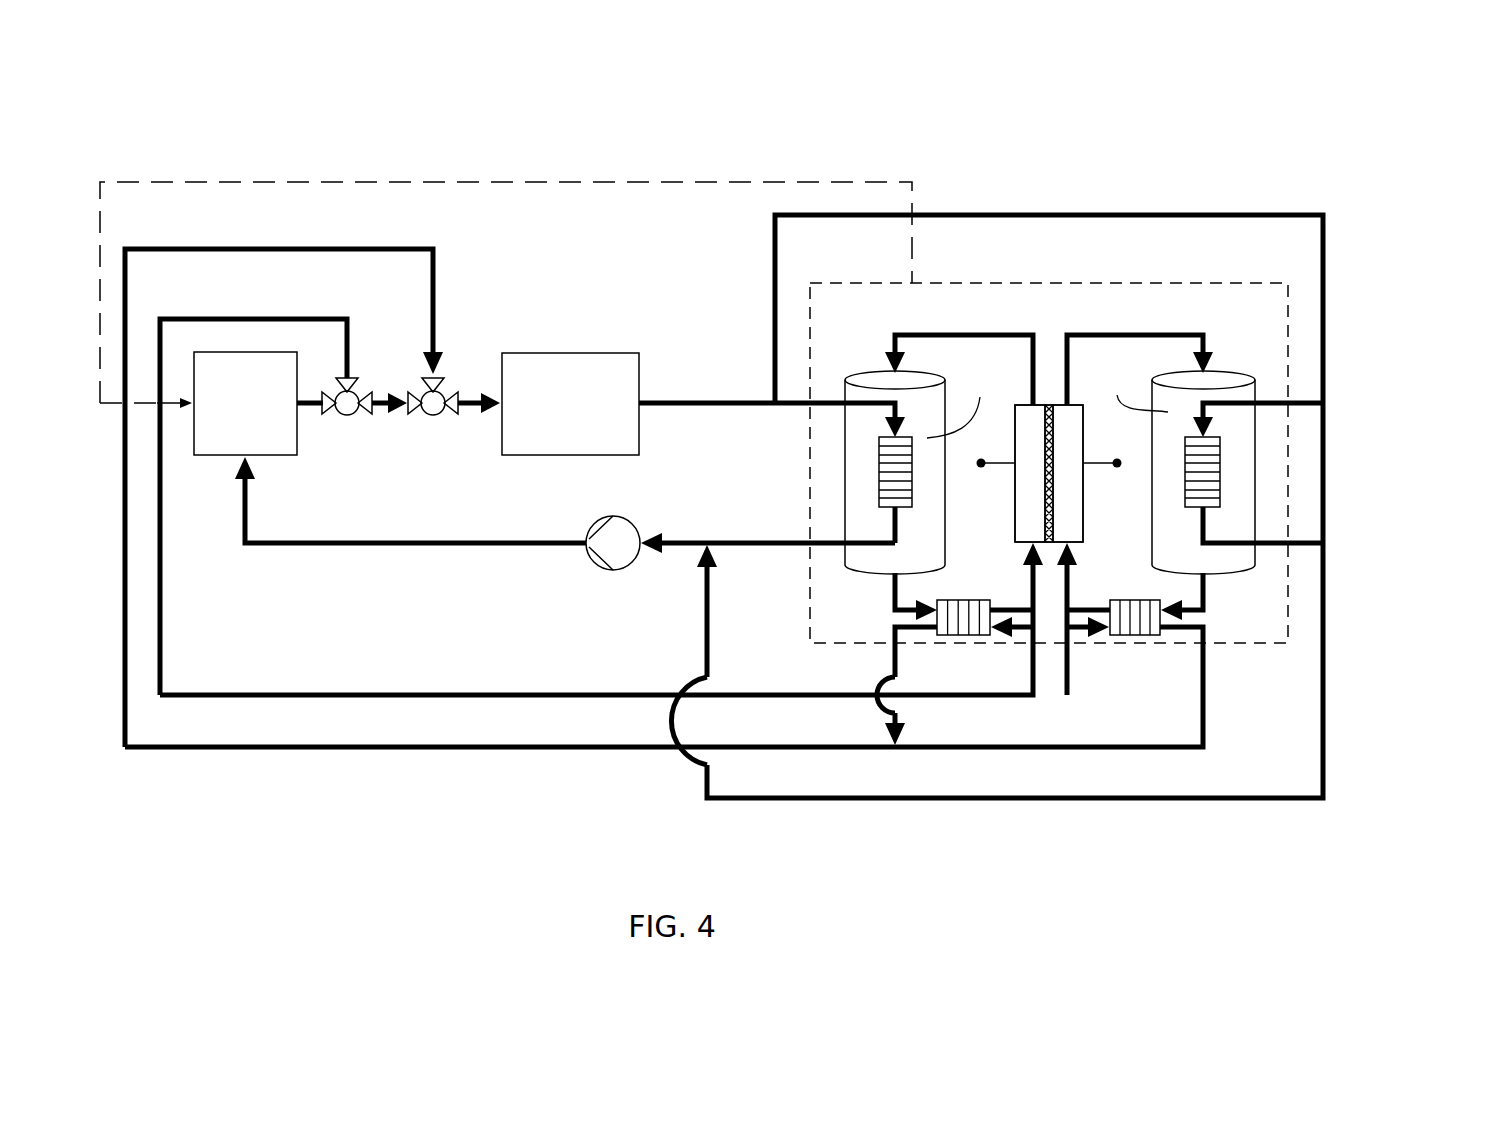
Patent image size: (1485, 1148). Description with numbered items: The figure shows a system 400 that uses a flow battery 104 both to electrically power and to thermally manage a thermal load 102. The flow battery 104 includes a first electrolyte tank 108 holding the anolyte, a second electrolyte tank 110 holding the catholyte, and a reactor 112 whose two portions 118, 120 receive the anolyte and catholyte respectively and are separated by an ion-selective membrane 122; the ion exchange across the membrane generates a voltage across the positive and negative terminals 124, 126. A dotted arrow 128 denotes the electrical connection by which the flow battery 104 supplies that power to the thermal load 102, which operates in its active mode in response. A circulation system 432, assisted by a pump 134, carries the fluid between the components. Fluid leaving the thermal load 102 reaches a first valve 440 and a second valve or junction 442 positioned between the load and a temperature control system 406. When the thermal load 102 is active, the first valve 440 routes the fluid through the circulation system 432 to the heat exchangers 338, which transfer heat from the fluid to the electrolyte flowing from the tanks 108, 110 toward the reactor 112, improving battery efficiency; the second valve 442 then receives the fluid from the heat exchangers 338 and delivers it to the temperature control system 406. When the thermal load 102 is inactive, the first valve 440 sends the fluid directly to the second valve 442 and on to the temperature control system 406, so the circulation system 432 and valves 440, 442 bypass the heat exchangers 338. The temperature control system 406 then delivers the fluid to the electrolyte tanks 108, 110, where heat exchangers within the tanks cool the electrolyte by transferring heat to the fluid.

The system 400 is at (792, 454).
The dotted arrow 128 is at (531, 182).
The circulation system 432 is at (264, 249).
The thermal load 102 is at (245, 403).
The first valve 440 is at (348, 416).
The second valve or other junction 442 is at (434, 416).
The temperature control system 406 is at (570, 404).
The pump 134 is at (595, 566).
The flow battery 104 is at (1067, 283).
The first electrolyte tank 108 is at (873, 378).
The second electrolyte tank 110 is at (1222, 377).
The reactor 112 is at (1052, 475).
The reactor portion 118 is at (1026, 508).
The reactor portion 120 is at (1074, 508).
The ion-selective membrane 122 is at (1052, 526).
The positive terminal 124 is at (998, 466).
The negative terminal 126 is at (1099, 466).
The heat exchanger 338 is at (965, 600).